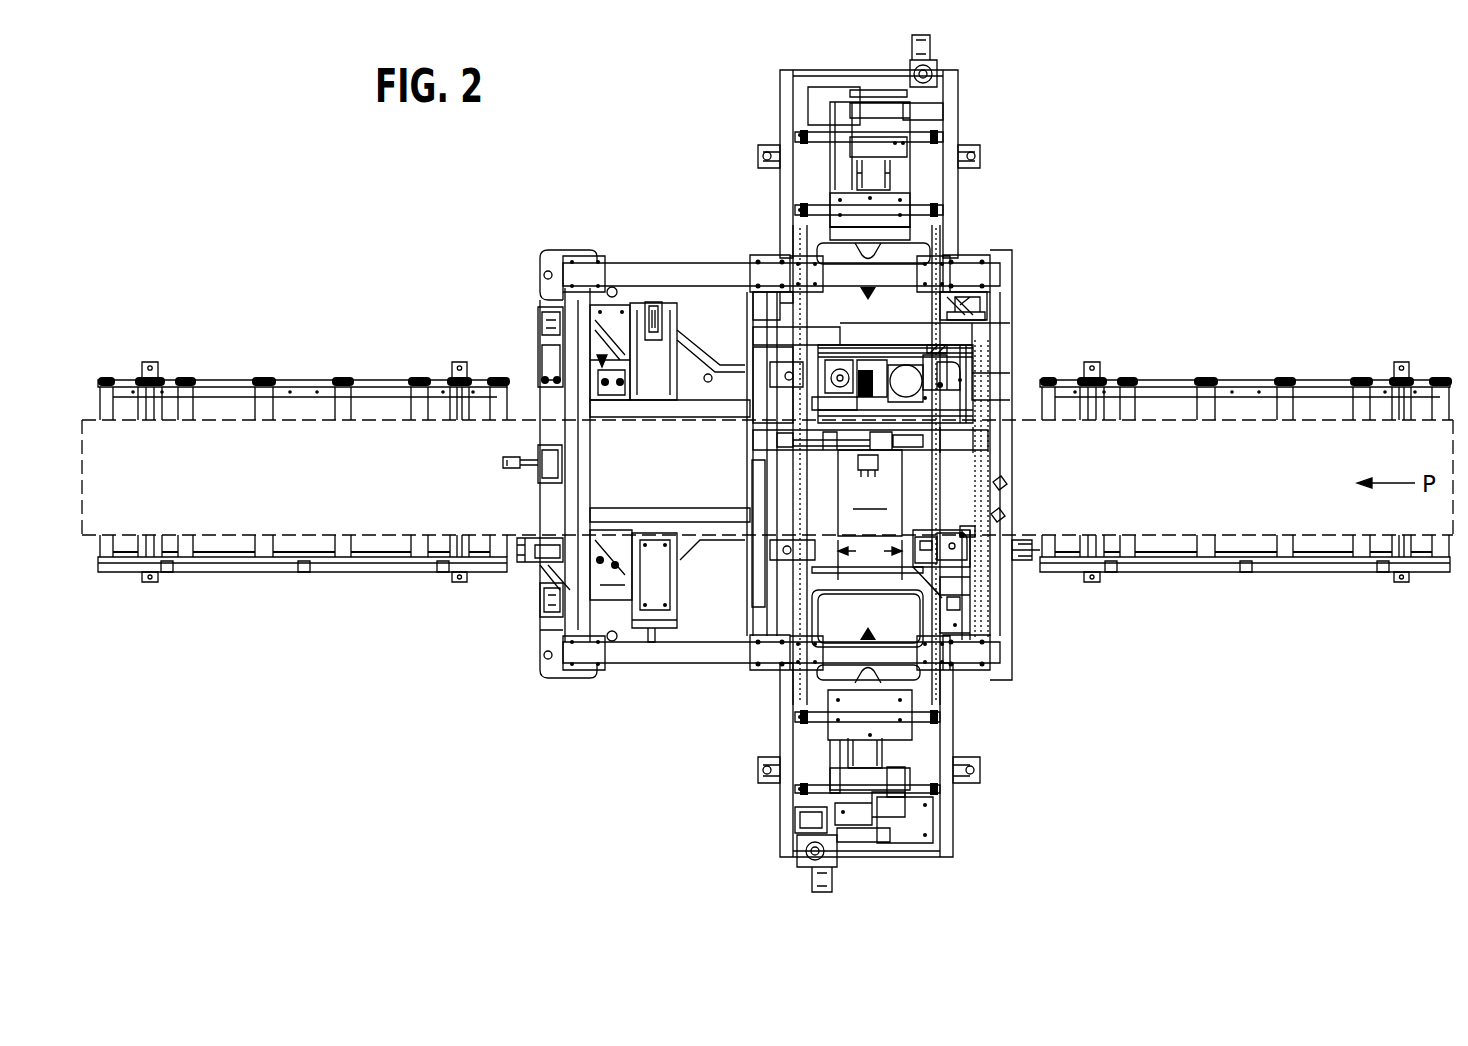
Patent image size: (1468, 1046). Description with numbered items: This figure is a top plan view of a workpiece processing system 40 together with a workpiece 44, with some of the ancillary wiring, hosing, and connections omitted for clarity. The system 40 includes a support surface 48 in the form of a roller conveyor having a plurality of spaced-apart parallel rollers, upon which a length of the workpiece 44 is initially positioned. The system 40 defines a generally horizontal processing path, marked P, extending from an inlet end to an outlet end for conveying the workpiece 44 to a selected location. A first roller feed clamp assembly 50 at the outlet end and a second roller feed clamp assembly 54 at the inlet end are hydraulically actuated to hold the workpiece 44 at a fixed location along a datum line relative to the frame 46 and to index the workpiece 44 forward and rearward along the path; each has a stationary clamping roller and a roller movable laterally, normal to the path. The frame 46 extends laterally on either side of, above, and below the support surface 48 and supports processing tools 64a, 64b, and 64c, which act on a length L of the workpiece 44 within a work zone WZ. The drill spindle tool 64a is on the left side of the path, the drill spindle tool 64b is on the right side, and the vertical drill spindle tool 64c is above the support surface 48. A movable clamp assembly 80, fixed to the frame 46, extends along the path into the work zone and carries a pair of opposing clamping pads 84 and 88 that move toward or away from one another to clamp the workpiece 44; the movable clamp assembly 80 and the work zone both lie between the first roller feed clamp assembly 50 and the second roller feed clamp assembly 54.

The system 40 is at (505, 704).
The workpiece 44 is at (1333, 490).
The frame 46 is at (580, 684).
The support surface 48 is at (345, 383).
The first roller feed clamp assembly 50 is at (617, 413).
The second roller feed clamp assembly 54 is at (968, 556).
The drill spindle tool 64a is at (866, 672).
The drill spindle tool 64b is at (865, 248).
The vertical drill spindle tool 64c is at (985, 312).
The movable clamp assembly 80 is at (610, 425).
The clamping pad 84 is at (628, 385).
The clamping pad 88 is at (540, 585).